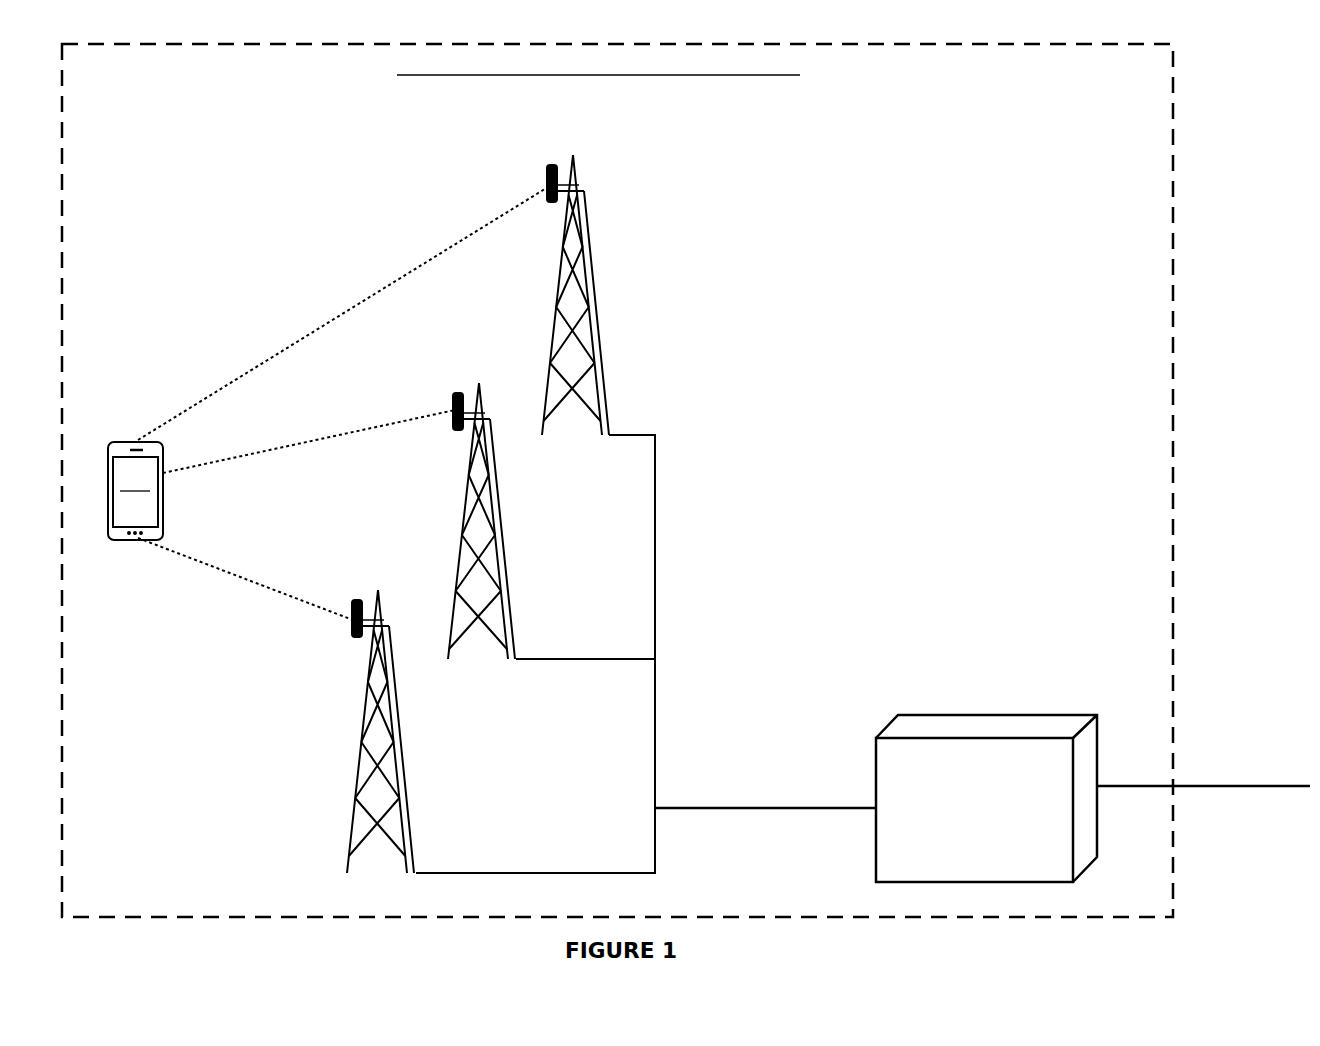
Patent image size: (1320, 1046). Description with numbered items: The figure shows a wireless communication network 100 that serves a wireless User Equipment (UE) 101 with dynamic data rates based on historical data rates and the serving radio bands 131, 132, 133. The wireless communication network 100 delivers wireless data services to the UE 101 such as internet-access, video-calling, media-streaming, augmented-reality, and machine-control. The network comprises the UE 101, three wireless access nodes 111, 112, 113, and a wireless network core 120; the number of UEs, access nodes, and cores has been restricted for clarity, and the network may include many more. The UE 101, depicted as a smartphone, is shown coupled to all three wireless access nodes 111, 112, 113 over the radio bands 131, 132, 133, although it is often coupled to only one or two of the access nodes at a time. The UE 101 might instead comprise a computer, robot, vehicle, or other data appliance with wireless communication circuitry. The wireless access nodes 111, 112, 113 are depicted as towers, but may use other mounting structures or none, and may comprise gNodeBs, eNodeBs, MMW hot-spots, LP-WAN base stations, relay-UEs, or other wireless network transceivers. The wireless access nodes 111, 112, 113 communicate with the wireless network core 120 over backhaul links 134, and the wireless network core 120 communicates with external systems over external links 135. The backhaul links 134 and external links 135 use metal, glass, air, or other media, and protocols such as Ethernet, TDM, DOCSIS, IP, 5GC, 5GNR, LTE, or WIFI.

The wireless communication network 100 is at (838, 75).
The wireless User Equipment (UE) 101 is at (151, 511).
The wireless access node 111 is at (378, 590).
The wireless access node 112 is at (479, 383).
The wireless access node 113 is at (573, 160).
The wireless network core 120 is at (986, 798).
The serving radio band 131 is at (250, 581).
The serving radio band 132 is at (325, 437).
The serving radio band 133 is at (388, 283).
The backhaul link 134 is at (763, 808).
The external link 135 is at (1227, 786).